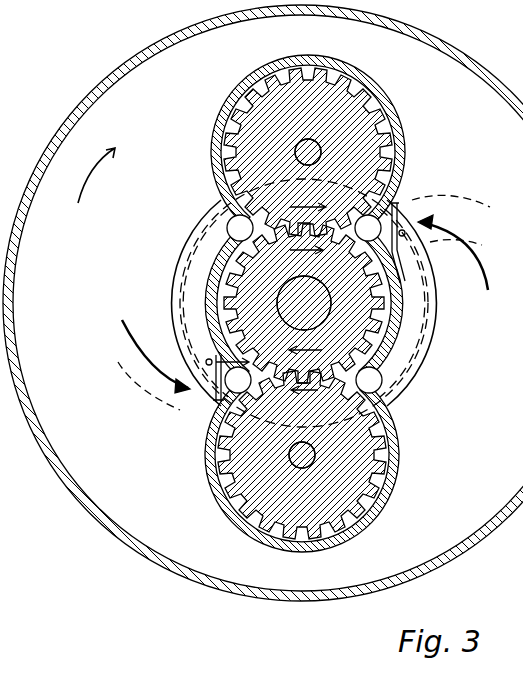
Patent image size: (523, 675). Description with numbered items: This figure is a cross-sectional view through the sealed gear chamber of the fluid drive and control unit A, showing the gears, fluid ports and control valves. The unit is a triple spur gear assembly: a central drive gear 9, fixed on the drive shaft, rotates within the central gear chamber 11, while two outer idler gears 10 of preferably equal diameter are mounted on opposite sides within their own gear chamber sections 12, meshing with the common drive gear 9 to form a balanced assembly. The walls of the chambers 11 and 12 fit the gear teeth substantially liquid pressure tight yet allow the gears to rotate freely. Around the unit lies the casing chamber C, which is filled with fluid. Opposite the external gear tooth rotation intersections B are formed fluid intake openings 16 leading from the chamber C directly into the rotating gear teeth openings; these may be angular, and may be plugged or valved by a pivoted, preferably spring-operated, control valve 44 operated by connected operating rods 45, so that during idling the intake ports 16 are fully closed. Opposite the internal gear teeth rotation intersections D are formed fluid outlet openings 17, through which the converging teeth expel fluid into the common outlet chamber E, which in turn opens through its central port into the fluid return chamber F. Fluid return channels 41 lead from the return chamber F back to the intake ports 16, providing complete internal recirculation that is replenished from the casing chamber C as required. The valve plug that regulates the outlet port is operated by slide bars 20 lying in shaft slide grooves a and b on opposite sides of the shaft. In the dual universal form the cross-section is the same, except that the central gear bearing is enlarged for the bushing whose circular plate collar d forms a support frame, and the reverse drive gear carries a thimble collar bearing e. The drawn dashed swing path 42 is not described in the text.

The idler gear 10 is at (373, 90).
The gear chamber section 12 is at (395, 121).
The slide bar 20 is at (217, 297).
The fluid outlet opening 17 is at (226, 224).
The fluid intake opening 16 is at (208, 360).
The fluid return channel 41 is at (215, 400).
The pivoted control valve 44 is at (214, 394).
The operating rod 45 is at (200, 357).
The swing path 42 is at (124, 386).
The drive gear 9 is at (403, 270).
The central gear chamber 11 is at (401, 284).
The gear high pressure fluid drive and control unit A is at (404, 140).
The external gear tooth rotation intersection B is at (204, 360).
The casing chamber C is at (263, 303).
The internal gear teeth rotation intersection D is at (228, 210).
The outlet chamber E is at (434, 326).
The fluid return chamber F is at (430, 346).
The shaft slide groove a is at (225, 277).
The shaft slide groove b is at (375, 296).
The circular plate collar d is at (432, 341).
The thimble collar bearing e is at (437, 322).